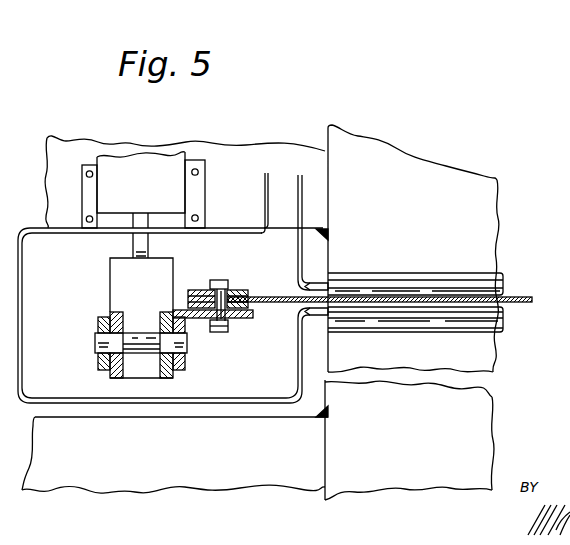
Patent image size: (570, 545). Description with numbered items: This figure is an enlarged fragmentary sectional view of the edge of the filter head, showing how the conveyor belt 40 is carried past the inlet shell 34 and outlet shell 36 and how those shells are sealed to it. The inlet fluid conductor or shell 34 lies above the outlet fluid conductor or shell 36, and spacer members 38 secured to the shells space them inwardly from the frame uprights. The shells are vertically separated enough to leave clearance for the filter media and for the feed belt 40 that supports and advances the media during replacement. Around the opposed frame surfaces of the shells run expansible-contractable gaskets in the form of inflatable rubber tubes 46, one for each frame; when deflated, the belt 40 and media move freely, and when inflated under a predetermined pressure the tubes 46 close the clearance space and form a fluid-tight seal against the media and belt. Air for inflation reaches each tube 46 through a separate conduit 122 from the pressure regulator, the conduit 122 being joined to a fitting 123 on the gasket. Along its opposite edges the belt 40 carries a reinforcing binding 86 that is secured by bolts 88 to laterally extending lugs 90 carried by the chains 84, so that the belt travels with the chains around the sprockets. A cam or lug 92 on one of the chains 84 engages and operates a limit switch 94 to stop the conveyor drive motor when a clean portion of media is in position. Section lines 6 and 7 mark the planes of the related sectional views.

The inlet fluid conductor or shell 34 is at (328, 132).
The outlet fluid conductor or shell 36 is at (413, 483).
The spacer member 38 is at (70, 142).
The conveyor belt 40 is at (513, 296).
The inflatable rubber tube 46 is at (447, 284).
The chain 84 is at (100, 364).
The reinforcing binding 86 is at (203, 290).
The bolt 88 is at (223, 288).
The lug 90 is at (249, 318).
The cam or lug 92 is at (117, 294).
The limit switch 94 is at (167, 163).
The conduit 122 is at (265, 193).
The fitting 123 is at (320, 284).
The section line 6- 6 is at (101, 260).
The section line 7- 7 is at (414, 343).